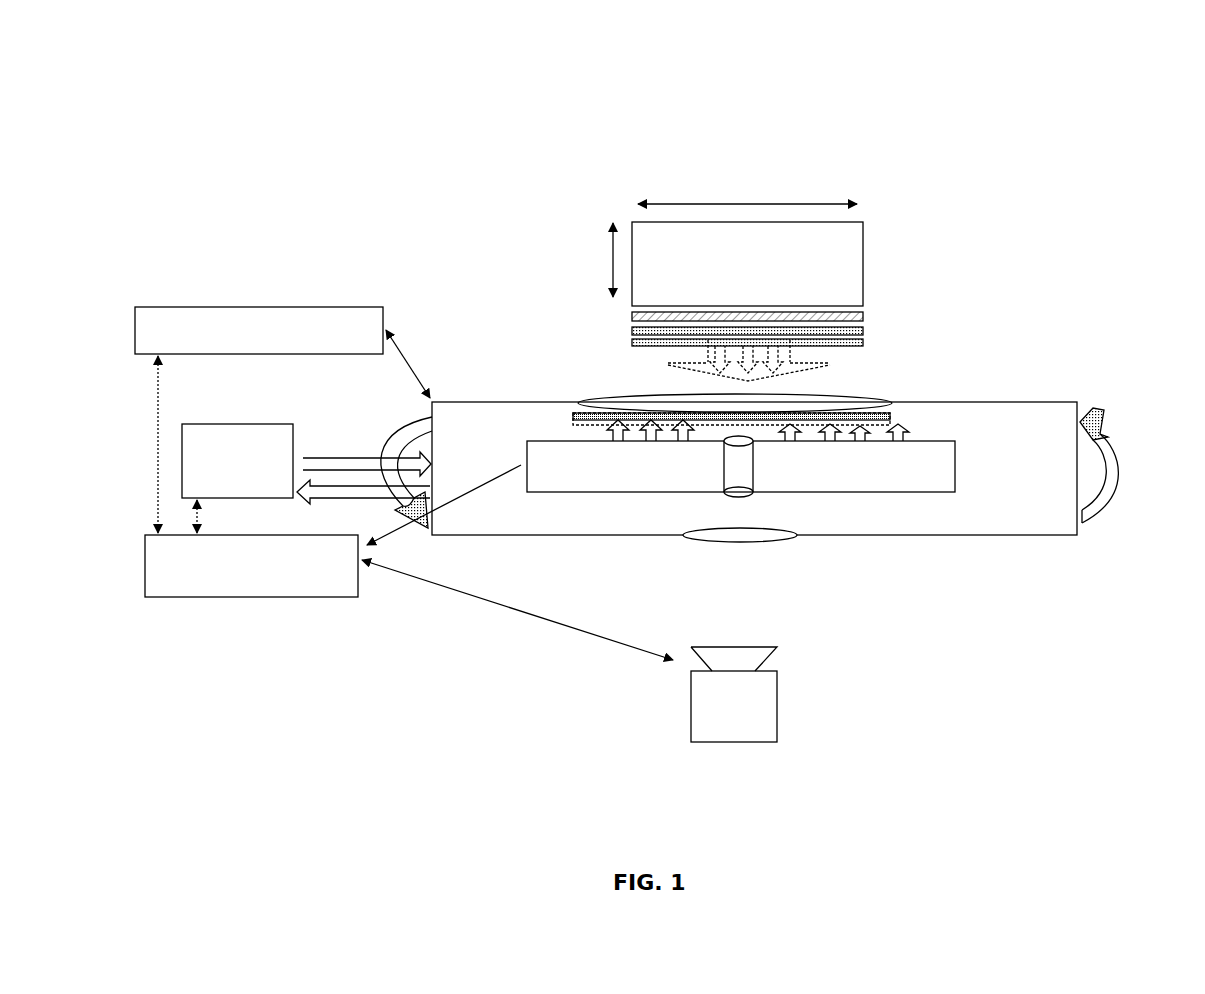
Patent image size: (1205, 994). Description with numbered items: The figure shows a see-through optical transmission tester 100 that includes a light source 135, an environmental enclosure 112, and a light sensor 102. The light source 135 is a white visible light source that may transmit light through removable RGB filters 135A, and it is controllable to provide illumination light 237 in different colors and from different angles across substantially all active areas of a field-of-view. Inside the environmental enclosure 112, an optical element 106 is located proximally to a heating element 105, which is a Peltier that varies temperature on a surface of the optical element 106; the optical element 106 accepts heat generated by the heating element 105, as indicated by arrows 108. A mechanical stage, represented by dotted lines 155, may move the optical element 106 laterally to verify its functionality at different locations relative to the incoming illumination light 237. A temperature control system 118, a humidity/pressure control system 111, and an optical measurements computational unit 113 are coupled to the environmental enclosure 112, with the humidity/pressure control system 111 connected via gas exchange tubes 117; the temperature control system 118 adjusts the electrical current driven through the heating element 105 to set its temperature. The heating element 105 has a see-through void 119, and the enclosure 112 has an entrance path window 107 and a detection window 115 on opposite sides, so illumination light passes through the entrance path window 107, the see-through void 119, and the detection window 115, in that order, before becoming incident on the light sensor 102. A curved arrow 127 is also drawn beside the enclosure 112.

The see-through optical transmission tester 100 is at (975, 116).
The light sensor 102 is at (690, 680).
The heating element 105 is at (620, 492).
The optical element 106 is at (595, 413).
The entrance path window 107 is at (858, 397).
The arrows 108 is at (903, 428).
The humidity/pressure control system 111 is at (250, 424).
The environmental enclosure 112 is at (520, 402).
The optical measurements computational unit 113 is at (258, 597).
The detection window 115 is at (716, 541).
The gas exchange tubes 117 is at (348, 457).
The temperature control system 118 is at (383, 307).
The see-through void 119 is at (753, 452).
The rotation of chamber 127 is at (1108, 420).
The light source 135 is at (881, 262).
The removable RGB filters 135A is at (878, 325).
The mechanical stage 155 is at (573, 420).
The illumination light 237 is at (708, 357).